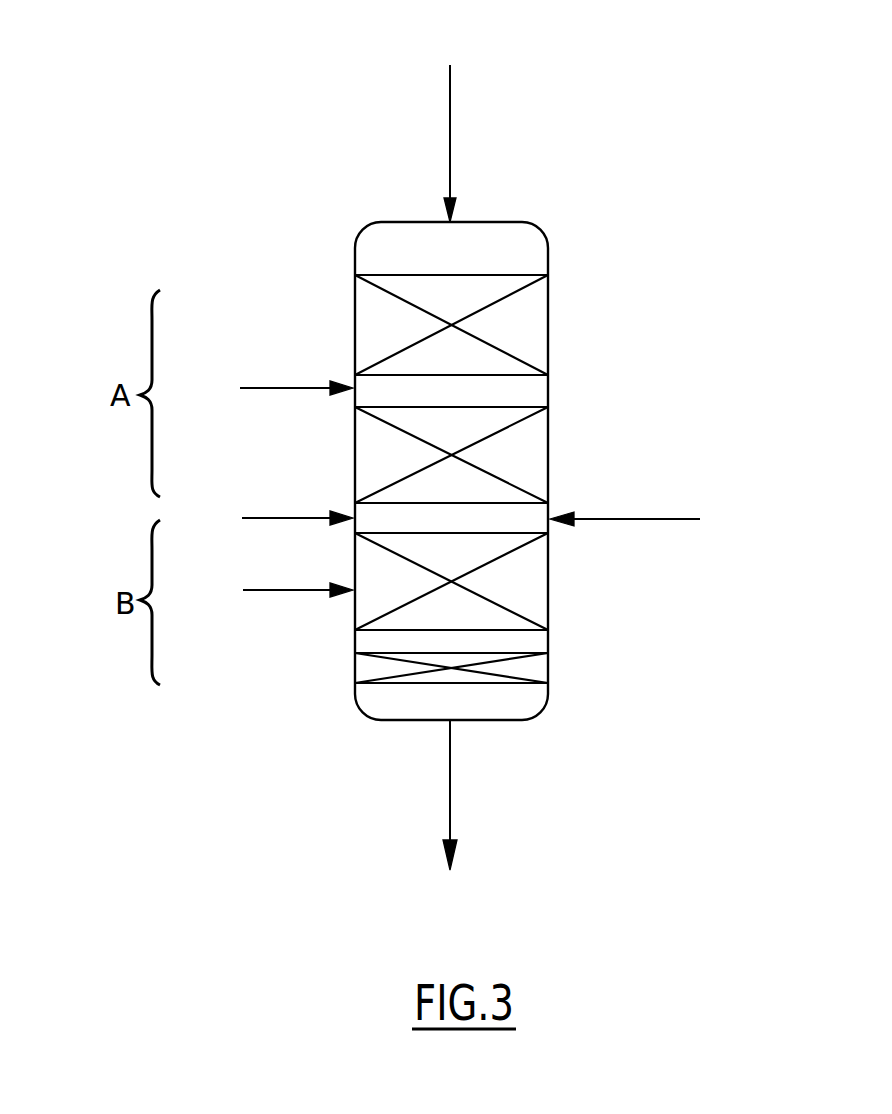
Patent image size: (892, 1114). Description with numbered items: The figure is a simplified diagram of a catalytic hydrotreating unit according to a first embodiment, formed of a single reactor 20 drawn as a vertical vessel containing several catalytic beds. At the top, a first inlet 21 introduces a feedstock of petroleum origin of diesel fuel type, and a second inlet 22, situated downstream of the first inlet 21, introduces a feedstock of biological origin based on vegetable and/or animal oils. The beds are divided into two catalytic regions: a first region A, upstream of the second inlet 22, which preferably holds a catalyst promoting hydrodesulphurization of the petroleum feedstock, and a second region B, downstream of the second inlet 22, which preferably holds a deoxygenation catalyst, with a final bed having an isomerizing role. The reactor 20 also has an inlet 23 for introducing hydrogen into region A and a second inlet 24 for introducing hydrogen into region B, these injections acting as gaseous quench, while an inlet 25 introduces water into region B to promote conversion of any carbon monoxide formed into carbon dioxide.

The reactor 20 is at (578, 250).
The first inlet 21 is at (452, 135).
The second inlet 22 is at (620, 522).
The inlet 23 is at (290, 388).
The second inlet 24 is at (292, 517).
The inlet 25 is at (284, 593).